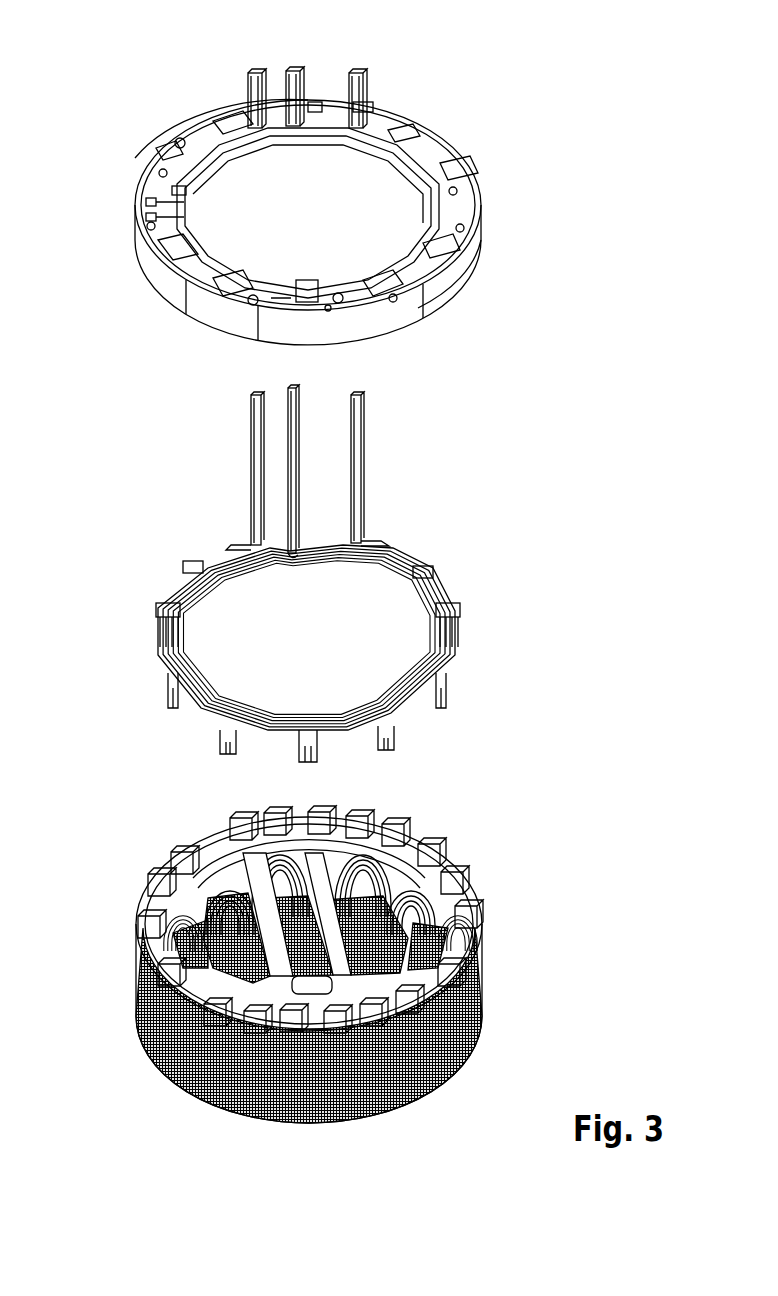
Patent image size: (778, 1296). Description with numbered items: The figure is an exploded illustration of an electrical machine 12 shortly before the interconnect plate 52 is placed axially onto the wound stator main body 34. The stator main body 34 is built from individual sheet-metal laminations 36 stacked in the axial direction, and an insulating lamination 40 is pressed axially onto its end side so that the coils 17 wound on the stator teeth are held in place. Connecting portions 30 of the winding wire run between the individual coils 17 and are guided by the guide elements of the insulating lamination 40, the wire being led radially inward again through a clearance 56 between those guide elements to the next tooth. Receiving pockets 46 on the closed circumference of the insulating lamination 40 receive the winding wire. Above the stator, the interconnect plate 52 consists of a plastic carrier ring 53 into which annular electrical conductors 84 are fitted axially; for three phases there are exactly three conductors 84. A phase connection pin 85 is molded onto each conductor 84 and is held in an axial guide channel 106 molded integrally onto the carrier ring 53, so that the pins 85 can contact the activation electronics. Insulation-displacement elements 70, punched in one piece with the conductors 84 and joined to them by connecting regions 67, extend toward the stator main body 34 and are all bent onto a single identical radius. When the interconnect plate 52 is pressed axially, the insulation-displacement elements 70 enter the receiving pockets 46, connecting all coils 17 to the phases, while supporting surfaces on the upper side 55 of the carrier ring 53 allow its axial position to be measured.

The electrical machine 12 is at (118, 104).
The axial guide channels 106 is at (283, 62).
The interconnect plate 52 is at (315, 176).
The upper side 55 is at (455, 165).
The carrier ring 53 is at (450, 267).
The annular electrical conductors 84 is at (294, 562).
The phase connection pin 85 is at (282, 412).
The connecting region 67 is at (150, 603).
The insulation-displacement elements 70 is at (160, 687).
The stator main body 34 is at (317, 926).
The receiving pockets 46 is at (185, 820).
The clearance 56 is at (217, 810).
The coil 17 is at (288, 832).
The connecting portions 30 is at (472, 950).
The insulating lamination 40 is at (433, 970).
The sheet-metal laminations 36 is at (163, 1070).